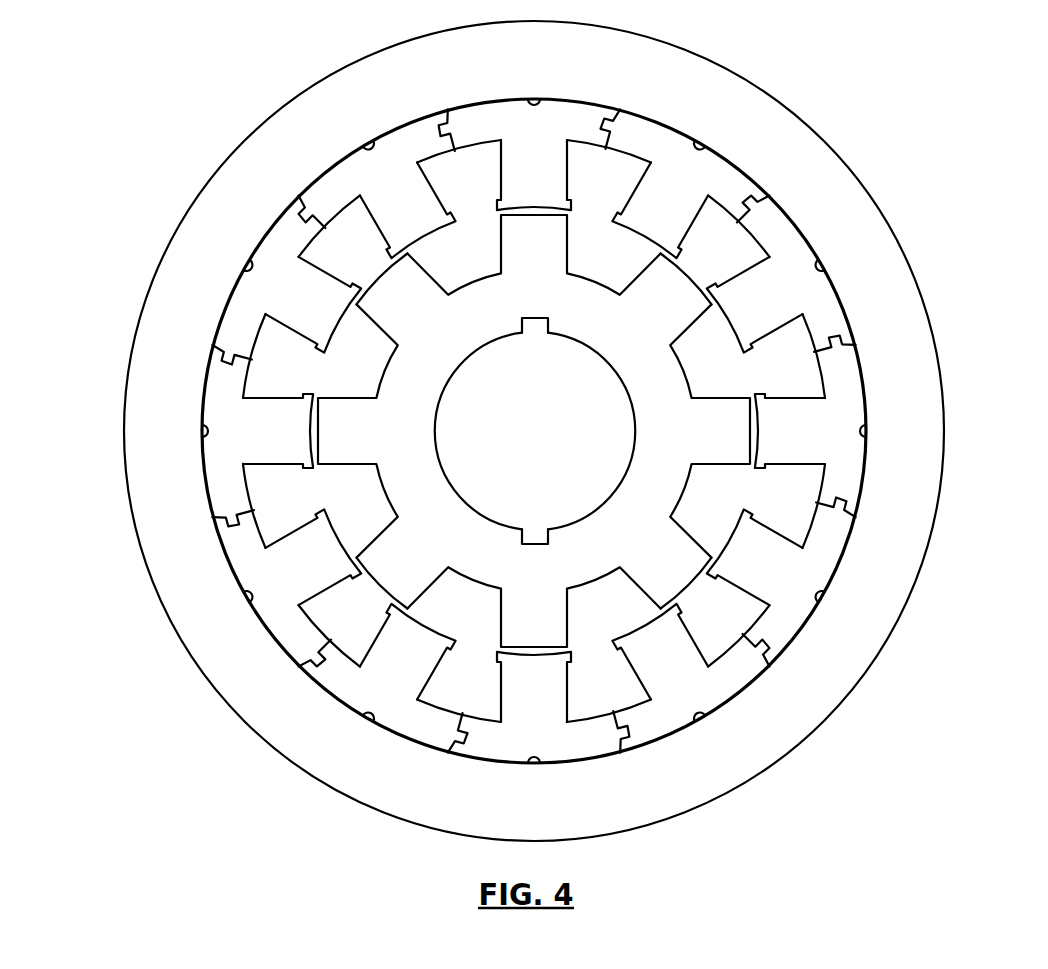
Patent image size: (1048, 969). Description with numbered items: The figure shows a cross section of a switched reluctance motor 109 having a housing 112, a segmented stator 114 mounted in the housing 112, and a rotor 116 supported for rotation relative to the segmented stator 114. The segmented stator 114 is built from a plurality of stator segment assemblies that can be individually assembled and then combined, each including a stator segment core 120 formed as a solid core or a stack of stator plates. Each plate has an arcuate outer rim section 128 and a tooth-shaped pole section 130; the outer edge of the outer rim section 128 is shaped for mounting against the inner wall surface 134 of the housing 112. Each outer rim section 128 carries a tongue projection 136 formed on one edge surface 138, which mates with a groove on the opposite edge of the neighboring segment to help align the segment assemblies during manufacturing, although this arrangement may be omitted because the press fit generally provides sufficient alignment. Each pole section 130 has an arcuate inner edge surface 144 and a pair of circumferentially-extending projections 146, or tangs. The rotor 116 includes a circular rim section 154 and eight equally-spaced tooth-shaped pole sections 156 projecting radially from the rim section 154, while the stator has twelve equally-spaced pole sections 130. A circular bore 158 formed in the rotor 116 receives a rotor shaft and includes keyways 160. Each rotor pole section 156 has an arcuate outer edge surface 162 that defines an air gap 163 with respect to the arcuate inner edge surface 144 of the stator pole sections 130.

The switched reluctance motor 109 is at (573, 431).
The housing 112 is at (883, 208).
The segmented stator 114 is at (848, 282).
The rotor 116 is at (588, 364).
The stator segment core 120 is at (577, 433).
The arcuate outer rim section 128 is at (611, 747).
The tooth-shaped pole section 130 is at (546, 692).
The inner wall surface 134 is at (825, 262).
The tongue projection 136 is at (447, 110).
The edge surface 138 is at (606, 113).
The arcuate inner edge surface 144 is at (522, 218).
The circumferentially-extending projections 146 is at (502, 205).
The circular rim section 154 is at (636, 451).
The tooth-shaped pole sections 156 is at (546, 624).
The circular bore 158 is at (608, 492).
The keyways 160 is at (543, 325).
The arcuate outer edge surface 162 is at (390, 272).
The air gap 163 is at (580, 233).